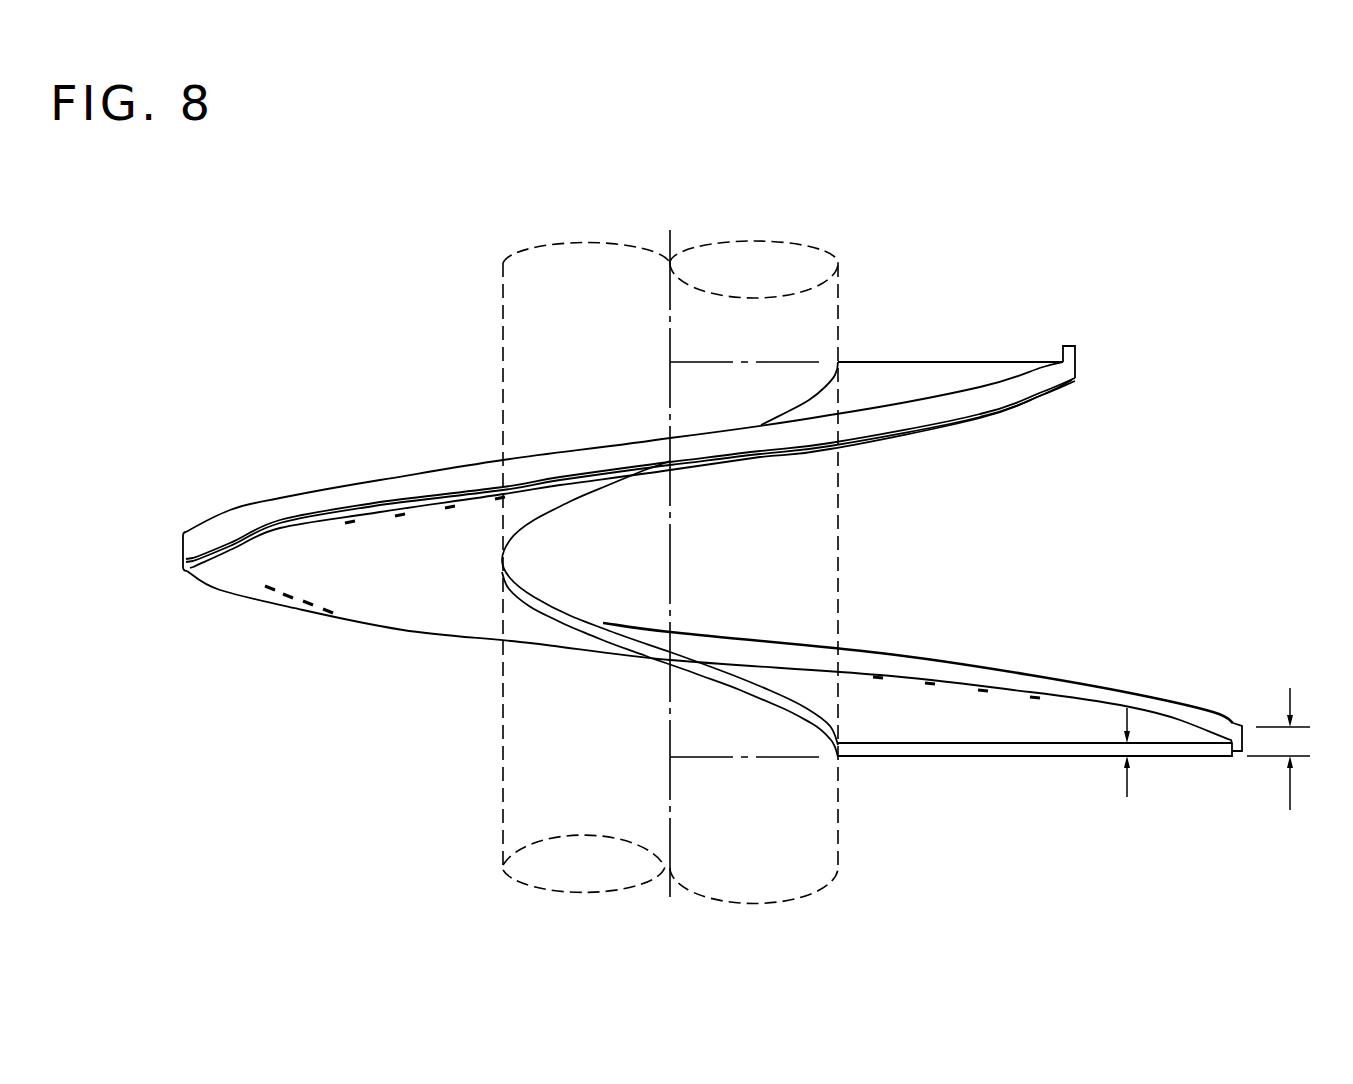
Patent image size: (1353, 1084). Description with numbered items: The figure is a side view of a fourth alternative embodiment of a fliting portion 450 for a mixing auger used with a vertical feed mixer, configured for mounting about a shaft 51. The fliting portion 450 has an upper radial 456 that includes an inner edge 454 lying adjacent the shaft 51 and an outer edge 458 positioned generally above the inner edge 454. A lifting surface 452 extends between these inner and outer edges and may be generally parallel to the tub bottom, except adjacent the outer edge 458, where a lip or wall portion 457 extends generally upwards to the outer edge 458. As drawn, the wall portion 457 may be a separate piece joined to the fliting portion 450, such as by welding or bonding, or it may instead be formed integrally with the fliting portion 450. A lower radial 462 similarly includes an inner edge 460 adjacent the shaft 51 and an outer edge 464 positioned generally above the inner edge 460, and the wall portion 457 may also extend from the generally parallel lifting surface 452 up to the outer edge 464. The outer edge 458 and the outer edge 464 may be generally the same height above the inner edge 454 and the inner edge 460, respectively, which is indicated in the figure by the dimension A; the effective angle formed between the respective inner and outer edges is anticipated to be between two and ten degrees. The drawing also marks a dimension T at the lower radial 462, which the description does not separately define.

The shaft 51 is at (545, 320).
The fliting portion 450 is at (398, 436).
The lifting surface 452 is at (878, 717).
The inner edge 454 is at (840, 362).
The upper radial 456 is at (928, 362).
The wall portion 457 is at (1042, 388).
The outer edge 458 is at (1073, 342).
The inner edge 460 is at (842, 757).
The lower radial 462 is at (1012, 752).
The outer edge 464 is at (1237, 718).
The flight thickness T is at (1127, 764).
The height A is at (1278, 760).